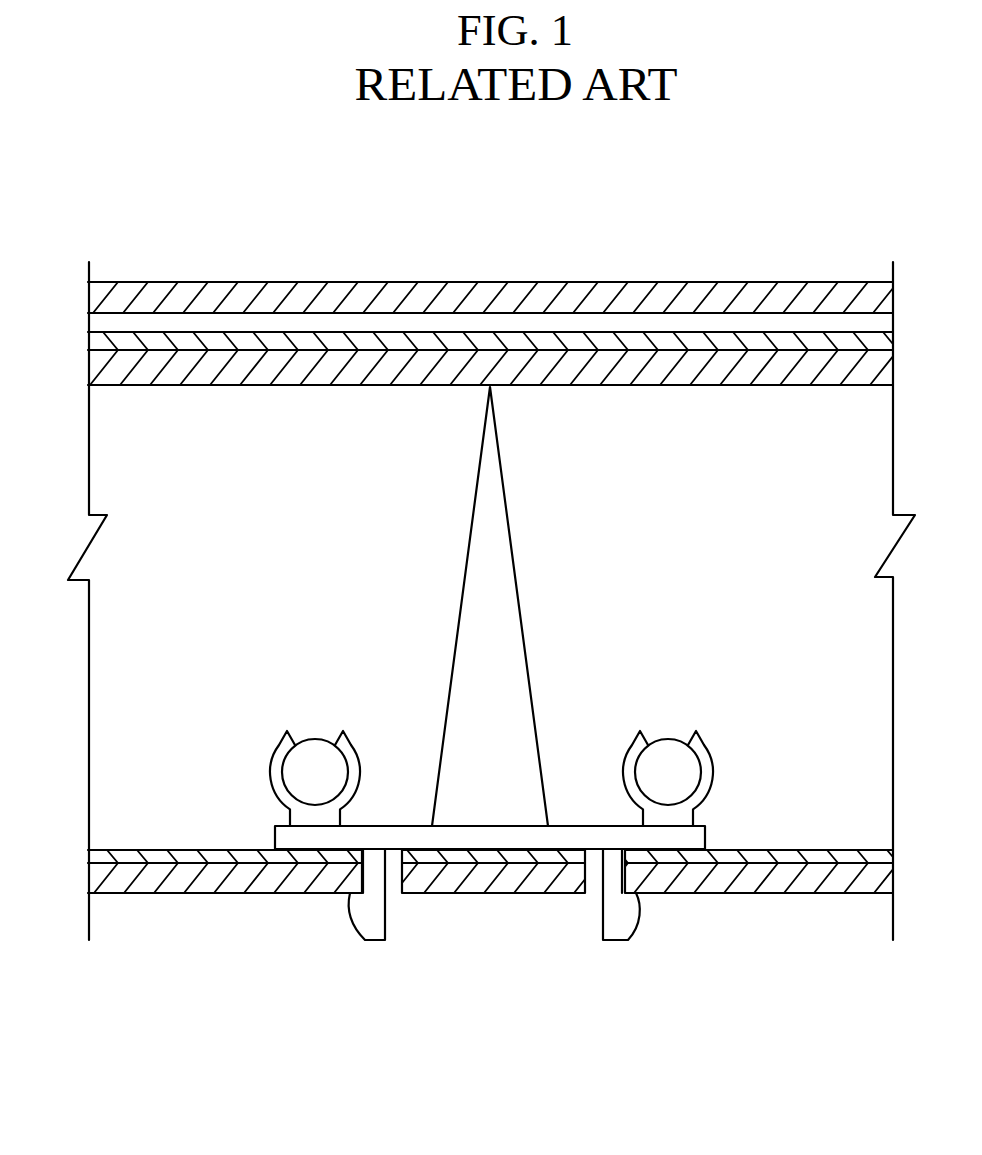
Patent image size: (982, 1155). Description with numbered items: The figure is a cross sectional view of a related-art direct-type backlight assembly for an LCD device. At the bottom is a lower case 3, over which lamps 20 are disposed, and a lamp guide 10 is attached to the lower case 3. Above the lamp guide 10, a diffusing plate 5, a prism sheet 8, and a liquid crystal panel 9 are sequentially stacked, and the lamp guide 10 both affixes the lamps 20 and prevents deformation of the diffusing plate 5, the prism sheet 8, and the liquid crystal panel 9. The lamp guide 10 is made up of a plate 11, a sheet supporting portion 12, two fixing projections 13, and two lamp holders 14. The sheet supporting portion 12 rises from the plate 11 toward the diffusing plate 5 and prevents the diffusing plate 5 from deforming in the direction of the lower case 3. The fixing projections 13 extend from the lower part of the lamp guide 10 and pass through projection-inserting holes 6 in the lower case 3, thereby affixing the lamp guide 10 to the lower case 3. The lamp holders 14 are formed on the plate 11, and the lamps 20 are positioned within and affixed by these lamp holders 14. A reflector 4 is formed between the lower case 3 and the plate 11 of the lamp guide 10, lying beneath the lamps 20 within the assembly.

The lower case 3 is at (200, 895).
The reflector 4 is at (178, 851).
The diffusing plate 5 is at (650, 364).
The projection-inserting holes 6 is at (394, 897).
The prism sheet 8 is at (358, 343).
The liquid crystal panel 9 is at (240, 302).
The lamp guide 10 is at (602, 612).
The plate 11 is at (594, 845).
The sheet supporting portion 12 is at (488, 511).
The fixing projections 13 is at (370, 925).
The lamp holders 14 is at (357, 752).
The lamps 20 is at (313, 757).